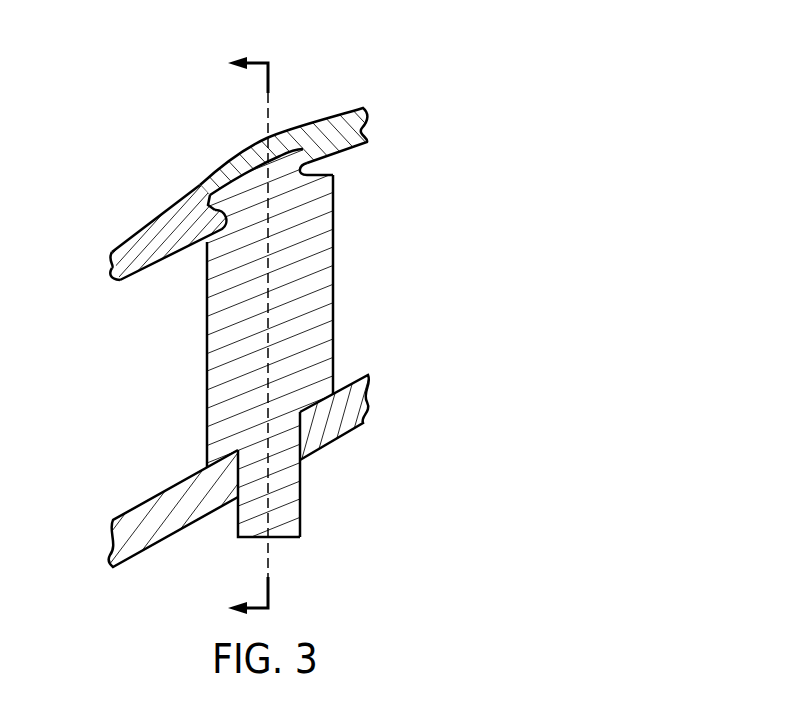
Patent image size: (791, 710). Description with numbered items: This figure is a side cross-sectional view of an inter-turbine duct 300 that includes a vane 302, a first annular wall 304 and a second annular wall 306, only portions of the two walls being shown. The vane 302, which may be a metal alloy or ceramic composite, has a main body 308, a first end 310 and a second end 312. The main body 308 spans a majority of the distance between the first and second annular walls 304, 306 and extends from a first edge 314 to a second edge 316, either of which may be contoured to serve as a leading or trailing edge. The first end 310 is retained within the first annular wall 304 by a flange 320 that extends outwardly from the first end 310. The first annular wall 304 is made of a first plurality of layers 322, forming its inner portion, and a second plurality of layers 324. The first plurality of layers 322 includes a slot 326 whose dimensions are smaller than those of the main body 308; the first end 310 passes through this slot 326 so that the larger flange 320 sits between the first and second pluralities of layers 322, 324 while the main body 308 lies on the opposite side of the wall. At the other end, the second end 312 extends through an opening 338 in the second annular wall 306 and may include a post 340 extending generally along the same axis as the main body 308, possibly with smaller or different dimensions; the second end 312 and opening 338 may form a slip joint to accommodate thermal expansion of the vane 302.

The inter-turbine duct 300 is at (364, 90).
The vane 302 is at (318, 287).
The first annular wall 304 is at (122, 241).
The second annular wall 306 is at (111, 546).
The main body 308 is at (324, 333).
The first end 310 is at (300, 167).
The second end 312 is at (243, 537).
The first edge 314 is at (207, 375).
The second edge 316 is at (334, 230).
The flange 320 is at (224, 195).
The first plurality of layers 322 is at (118, 284).
The second plurality of layers 324 is at (112, 256).
The slot 326 is at (335, 176).
The opening 338 is at (301, 461).
The post 340 is at (299, 510).